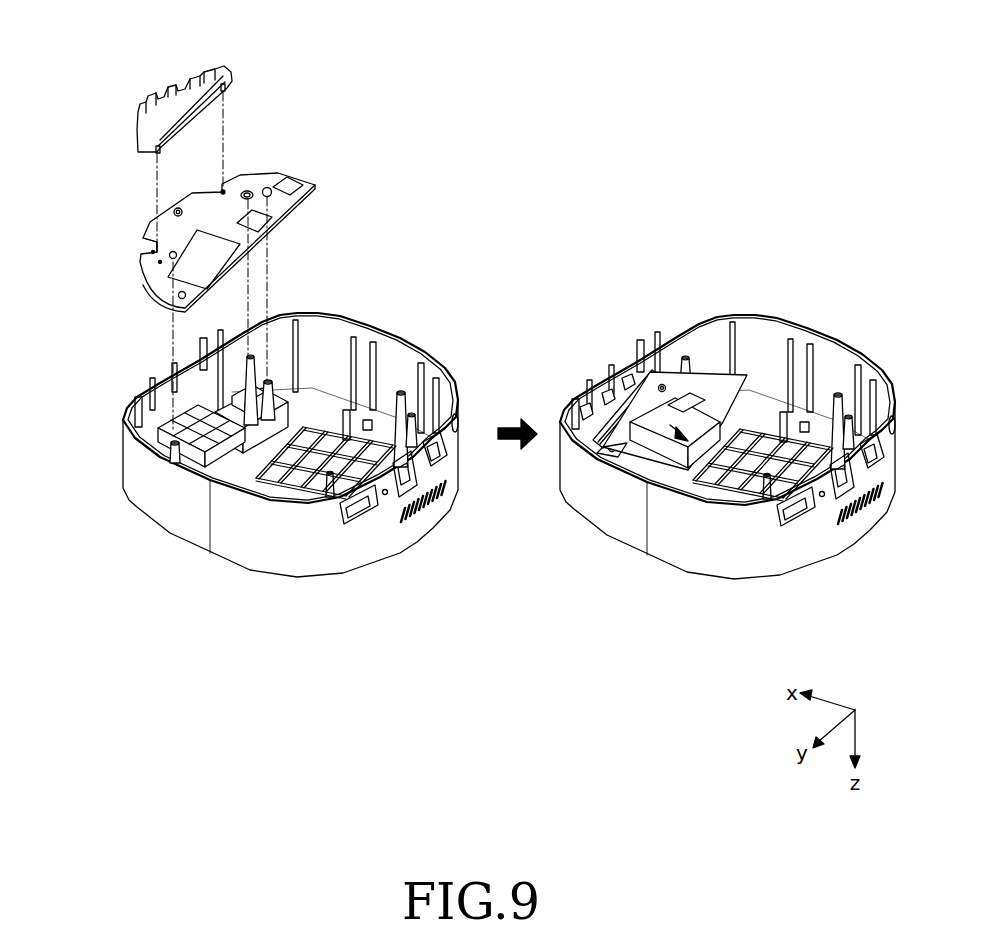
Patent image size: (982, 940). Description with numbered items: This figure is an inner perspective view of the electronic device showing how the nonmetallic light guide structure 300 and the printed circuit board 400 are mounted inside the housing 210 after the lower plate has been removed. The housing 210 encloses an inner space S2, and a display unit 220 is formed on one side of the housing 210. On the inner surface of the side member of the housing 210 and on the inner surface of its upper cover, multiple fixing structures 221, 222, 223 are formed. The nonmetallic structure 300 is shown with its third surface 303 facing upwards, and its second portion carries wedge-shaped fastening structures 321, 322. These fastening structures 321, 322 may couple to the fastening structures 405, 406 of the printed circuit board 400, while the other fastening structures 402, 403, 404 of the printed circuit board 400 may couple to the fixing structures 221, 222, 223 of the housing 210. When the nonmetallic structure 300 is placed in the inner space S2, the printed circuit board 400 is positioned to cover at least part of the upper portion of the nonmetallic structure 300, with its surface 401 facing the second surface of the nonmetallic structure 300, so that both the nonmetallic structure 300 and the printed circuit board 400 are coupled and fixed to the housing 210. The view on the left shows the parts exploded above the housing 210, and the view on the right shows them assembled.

The housing 210 is at (135, 462).
The display unit 220 is at (220, 392).
The fixing structure 221 is at (255, 352).
The fixing structure 222 is at (268, 380).
The fixing structure 223 is at (172, 447).
The nonmetallic light guide structure 300 is at (130, 86).
The third surface 303 is at (207, 82).
The wedge structure 321 is at (156, 151).
The wedge structure 322 is at (226, 86).
The printed circuit board 400 is at (135, 221).
The surface 401 is at (160, 240).
The fastening structure 402 is at (250, 196).
The fastening structure 403 is at (270, 192).
The fastening structure 404 is at (153, 277).
The fastening structure 405 is at (225, 190).
The fastening structure 406 is at (152, 253).
The inner space S2 is at (272, 440).